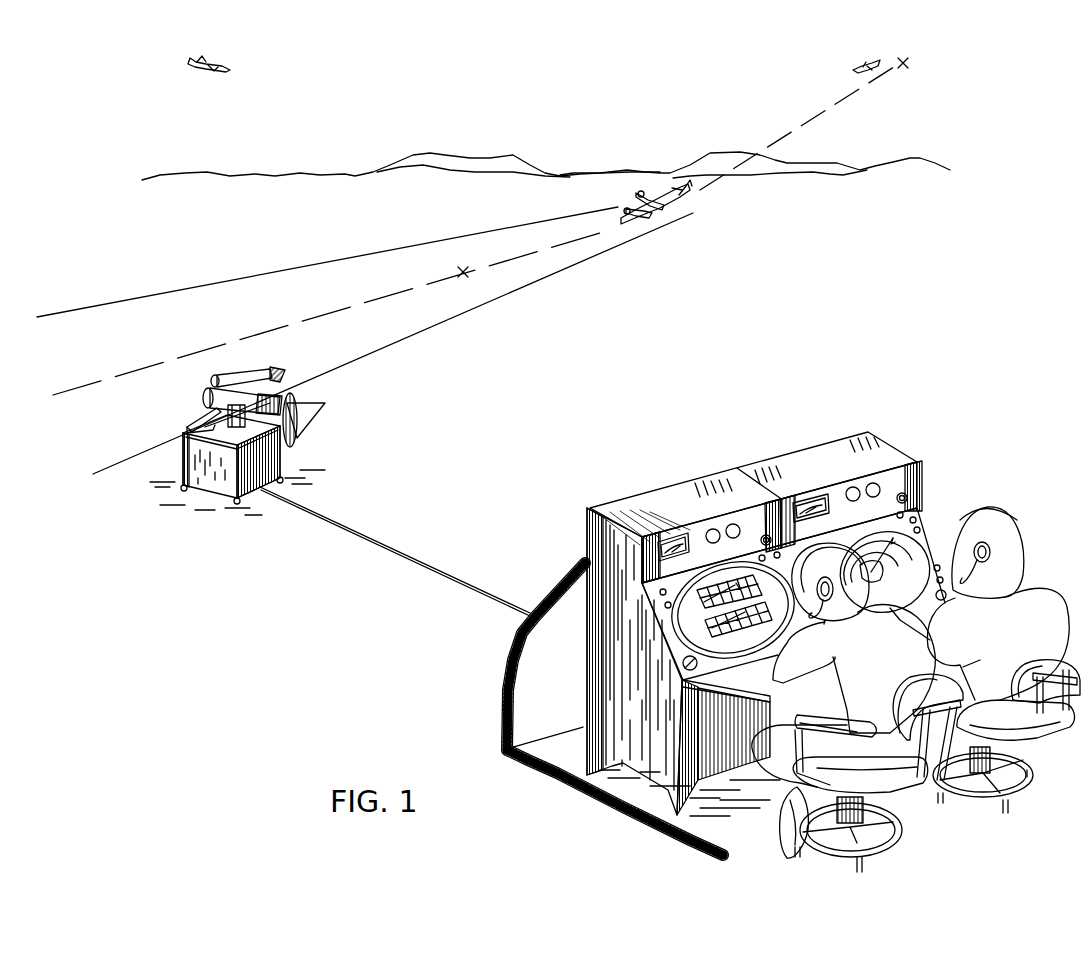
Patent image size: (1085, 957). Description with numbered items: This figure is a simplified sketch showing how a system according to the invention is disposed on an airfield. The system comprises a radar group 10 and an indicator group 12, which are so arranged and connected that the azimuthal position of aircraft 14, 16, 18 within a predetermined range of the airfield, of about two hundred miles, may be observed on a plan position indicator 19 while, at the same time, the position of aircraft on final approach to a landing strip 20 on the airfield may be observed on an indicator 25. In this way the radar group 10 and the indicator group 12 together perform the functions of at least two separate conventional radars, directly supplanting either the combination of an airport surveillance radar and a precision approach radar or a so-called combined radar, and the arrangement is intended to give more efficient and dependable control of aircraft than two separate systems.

The radar group 10 is at (299, 464).
The indicator group 12 is at (766, 616).
The aircraft 14 is at (695, 208).
The aircraft 16 is at (857, 67).
The aircraft 18 is at (211, 72).
The plan position indicator (PPI) 19 is at (810, 446).
The landing strip 20 is at (407, 337).
The indicator 25 is at (647, 490).